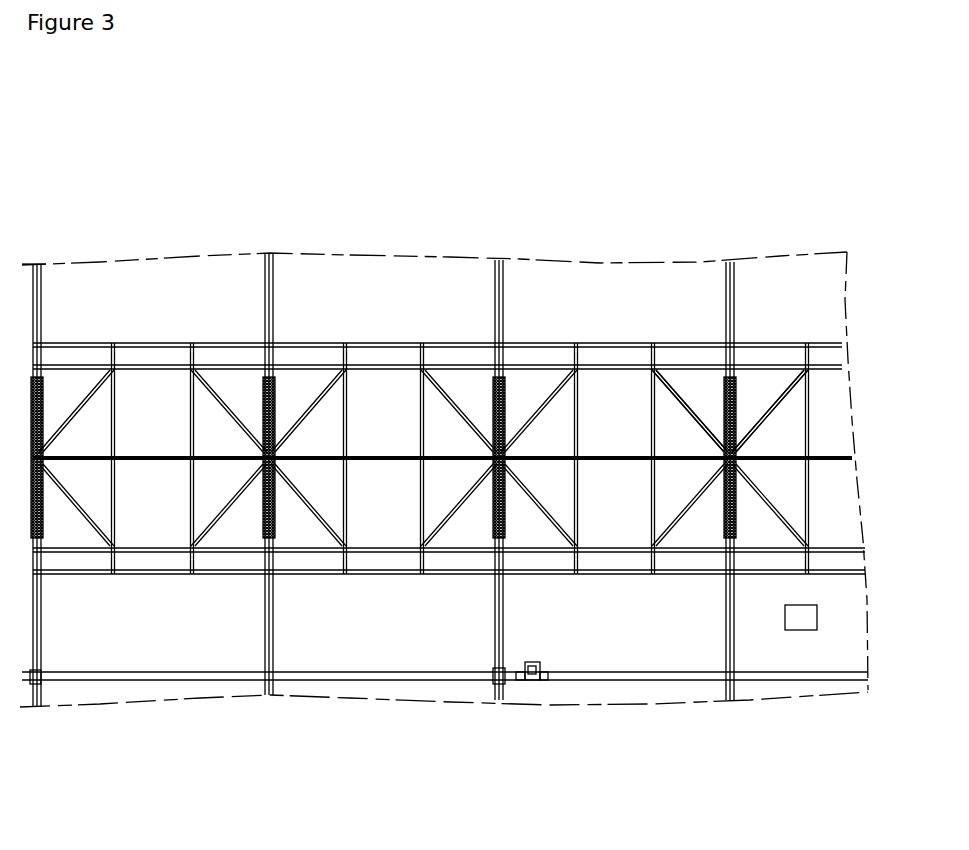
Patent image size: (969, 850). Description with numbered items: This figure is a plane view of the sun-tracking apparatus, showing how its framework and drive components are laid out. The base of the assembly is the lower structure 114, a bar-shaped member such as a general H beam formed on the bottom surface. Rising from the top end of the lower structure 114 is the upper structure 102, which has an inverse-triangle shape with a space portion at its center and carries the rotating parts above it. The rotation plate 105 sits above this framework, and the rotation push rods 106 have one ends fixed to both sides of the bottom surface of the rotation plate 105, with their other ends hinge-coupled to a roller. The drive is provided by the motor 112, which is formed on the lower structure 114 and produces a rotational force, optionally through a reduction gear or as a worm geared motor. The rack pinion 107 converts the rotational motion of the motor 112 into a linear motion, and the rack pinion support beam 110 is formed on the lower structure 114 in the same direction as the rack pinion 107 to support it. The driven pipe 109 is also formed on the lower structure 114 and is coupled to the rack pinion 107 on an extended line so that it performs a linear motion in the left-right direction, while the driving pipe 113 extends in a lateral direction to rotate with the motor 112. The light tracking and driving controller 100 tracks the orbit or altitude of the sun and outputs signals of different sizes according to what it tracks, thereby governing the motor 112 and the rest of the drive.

The light tracking and driving controller 100 is at (800, 630).
The upper structure 102 is at (495, 515).
The rotation plate 105 is at (810, 395).
The rotation push rods 106 is at (772, 400).
The rack pinion 107 is at (41, 683).
The driven pipe 109 is at (273, 625).
The rack pinion support beam 110 is at (41, 614).
The motor 112 is at (540, 684).
The driving pipe 113 is at (326, 681).
The lower structure 114 is at (274, 312).